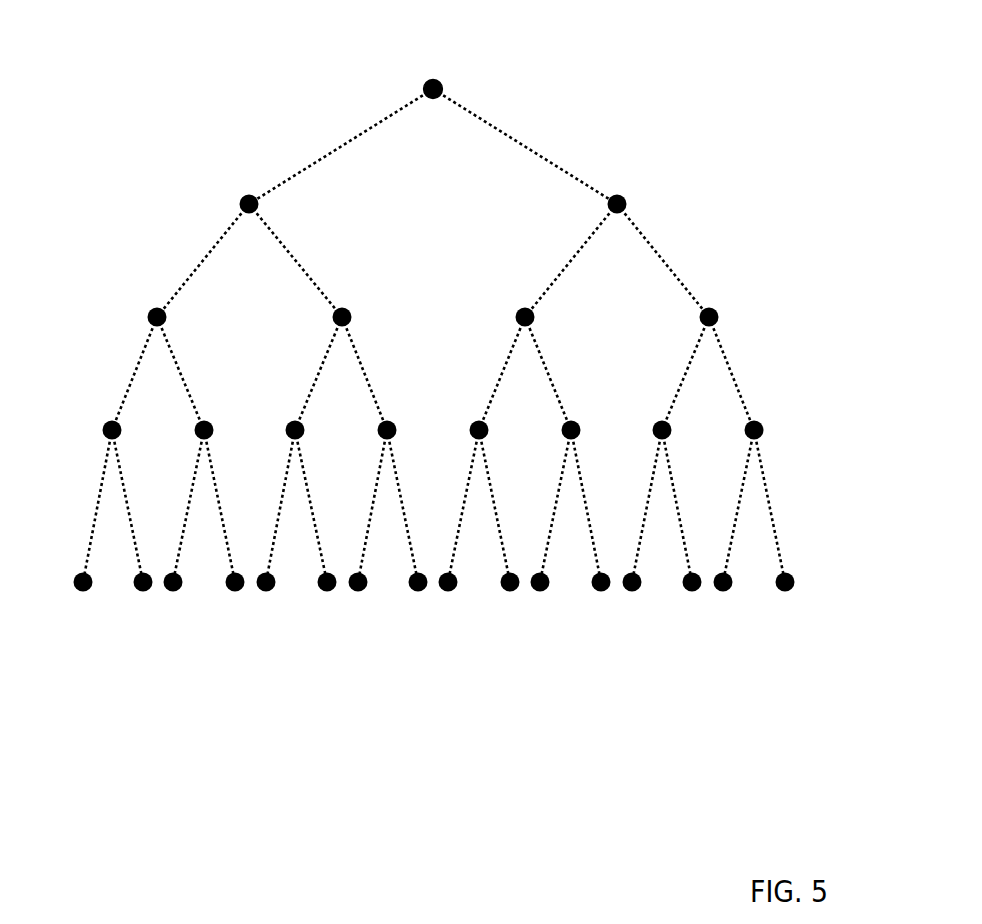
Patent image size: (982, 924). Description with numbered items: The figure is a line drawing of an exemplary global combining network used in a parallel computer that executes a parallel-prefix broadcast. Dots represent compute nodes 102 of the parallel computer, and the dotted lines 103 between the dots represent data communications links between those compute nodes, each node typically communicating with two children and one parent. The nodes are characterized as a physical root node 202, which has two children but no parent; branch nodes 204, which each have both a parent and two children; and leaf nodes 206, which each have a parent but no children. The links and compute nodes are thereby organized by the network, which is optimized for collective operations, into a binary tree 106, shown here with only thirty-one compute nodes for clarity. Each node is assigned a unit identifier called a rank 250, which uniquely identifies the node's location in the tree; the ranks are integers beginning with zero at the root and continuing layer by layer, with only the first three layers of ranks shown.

The compute nodes 102 is at (507, 592).
The dotted lines 103 is at (350, 140).
The binary tree 106 is at (468, 420).
The physical root node 202 is at (568, 63).
The branch nodes 204 is at (806, 150).
The leaf nodes 206 is at (808, 620).
The rank 250 is at (577, 212).